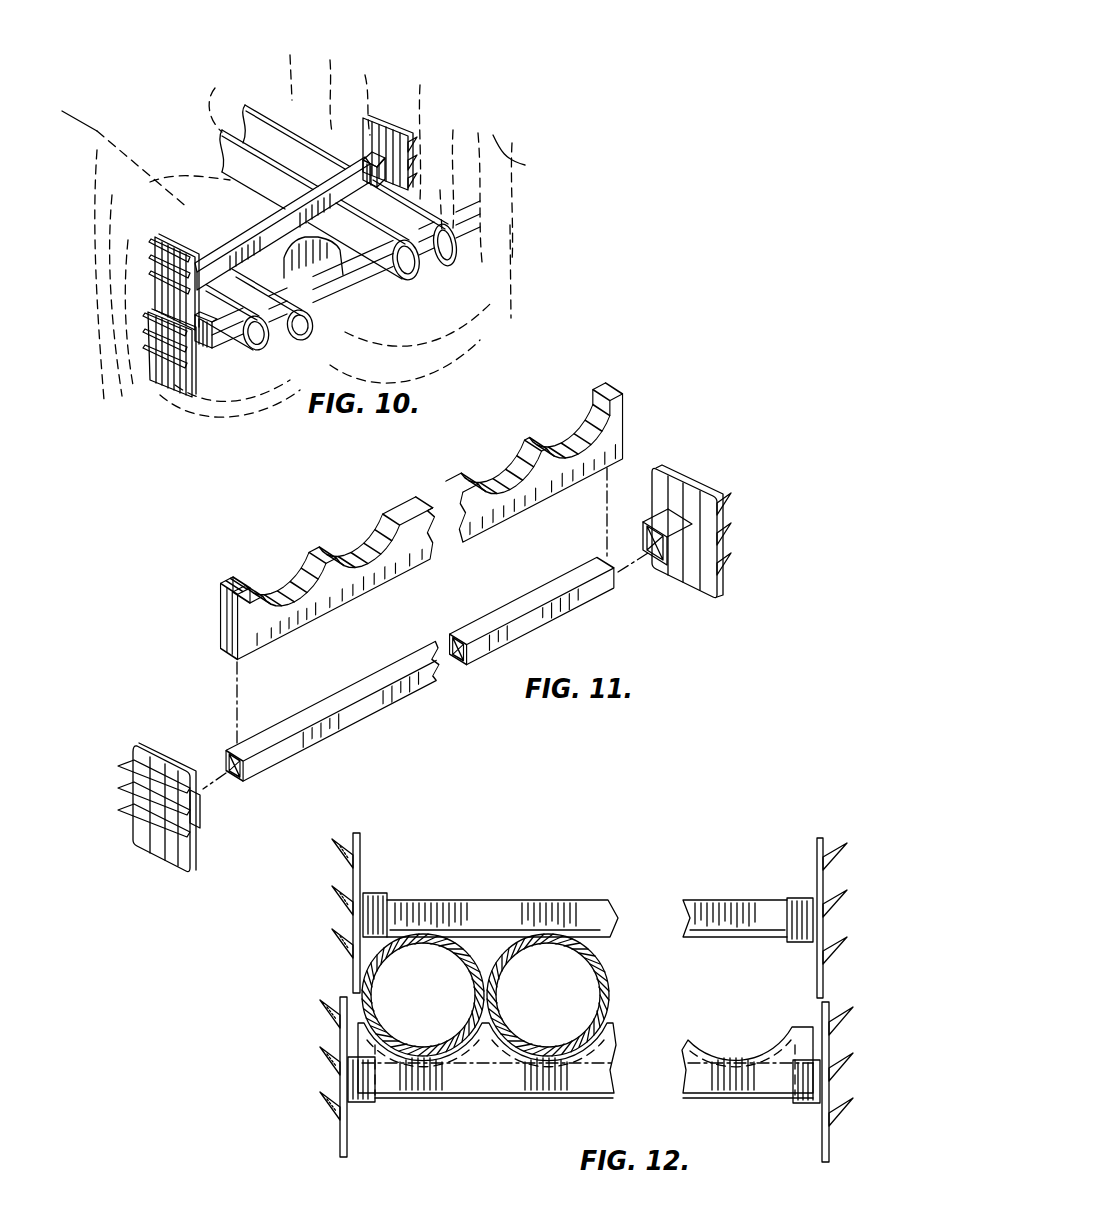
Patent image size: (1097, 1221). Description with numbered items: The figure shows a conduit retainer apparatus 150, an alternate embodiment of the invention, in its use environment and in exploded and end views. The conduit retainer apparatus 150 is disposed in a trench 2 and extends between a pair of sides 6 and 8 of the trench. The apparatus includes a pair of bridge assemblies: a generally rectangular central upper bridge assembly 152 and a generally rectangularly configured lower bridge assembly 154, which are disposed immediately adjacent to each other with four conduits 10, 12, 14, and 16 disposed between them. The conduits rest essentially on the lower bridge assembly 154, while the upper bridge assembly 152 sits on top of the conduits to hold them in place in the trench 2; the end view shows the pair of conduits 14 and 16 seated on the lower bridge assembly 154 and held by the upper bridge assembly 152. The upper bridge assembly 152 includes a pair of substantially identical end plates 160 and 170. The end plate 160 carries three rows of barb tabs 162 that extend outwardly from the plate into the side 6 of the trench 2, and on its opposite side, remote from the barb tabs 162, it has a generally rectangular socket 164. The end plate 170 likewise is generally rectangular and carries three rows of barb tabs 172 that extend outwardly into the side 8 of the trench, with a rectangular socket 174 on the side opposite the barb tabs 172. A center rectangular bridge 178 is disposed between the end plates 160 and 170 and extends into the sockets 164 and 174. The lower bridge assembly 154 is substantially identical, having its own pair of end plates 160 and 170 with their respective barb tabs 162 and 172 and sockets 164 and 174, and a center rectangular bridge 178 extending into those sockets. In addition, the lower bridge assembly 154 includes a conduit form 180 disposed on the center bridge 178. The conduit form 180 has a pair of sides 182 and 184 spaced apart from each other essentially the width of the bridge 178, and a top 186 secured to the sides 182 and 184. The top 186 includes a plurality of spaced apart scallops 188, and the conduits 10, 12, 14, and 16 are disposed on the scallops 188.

In FIG. 10, the trench 2 is at (178, 126).
In FIG. 10, the side 6 is at (355, 75).
In FIG. 10, the side 8 is at (96, 124).
In FIG. 10, the conduit 10 is at (500, 268).
In FIG. 10, the conduit 12 is at (415, 281).
In FIG. 10, the conduit 14 is at (314, 335).
In FIG. 12, the conduit 14 is at (597, 945).
In FIG. 10, the conduit 16 is at (270, 348).
In FIG. 12, the conduit 16 is at (467, 1047).
In FIG. 10, the conduit retainer apparatus 150 is at (361, 219).
In FIG. 12, the conduit retainer apparatus 150 is at (587, 963).
In FIG. 10, the upper bridge assembly 152 is at (280, 198).
In FIG. 12, the upper bridge assembly 152 is at (587, 976).
In FIG. 10, the lower bridge assembly 154 is at (154, 320).
In FIG. 11, the lower bridge assembly 154 is at (719, 532).
In FIG. 12, the lower bridge assembly 154 is at (358, 978).
In FIG. 10, the end plate 160 is at (377, 112).
In FIG. 11, the end plate 160 is at (690, 593).
In FIG. 12, the end plate 160 is at (812, 855).
In FIG. 10, the barb tabs 162 is at (393, 125).
In FIG. 11, the barb tabs 162 is at (715, 483).
In FIG. 12, the barb tabs 162 is at (847, 843).
In FIG. 10, the socket 164 is at (395, 168).
In FIG. 11, the socket 164 is at (657, 562).
In FIG. 12, the socket 164 is at (800, 898).
In FIG. 10, the end plate 170 is at (148, 293).
In FIG. 11, the end plate 170 is at (148, 853).
In FIG. 12, the end plate 170 is at (362, 850).
In FIG. 10, the barb tabs 172 is at (150, 243).
In FIG. 11, the barb tabs 172 is at (122, 764).
In FIG. 12, the barb tabs 172 is at (337, 903).
In FIG. 10, the socket 174 is at (227, 342).
In FIG. 11, the socket 174 is at (201, 809).
In FIG. 12, the socket 174 is at (375, 893).
In FIG. 10, the center rectangular bridge 178 is at (330, 150).
In FIG. 11, the center rectangular bridge 178 is at (338, 740).
In FIG. 12, the center rectangular bridge 178 is at (532, 900).
In FIG. 10, the conduit form 180 is at (326, 283).
In FIG. 11, the conduit form 180 is at (426, 525).
In FIG. 12, the conduit form 180 is at (585, 1057).
In FIG. 11, the side 182 is at (268, 637).
In FIG. 11, the side 184 is at (243, 640).
In FIG. 11, the top 186 is at (232, 590).
In FIG. 11, the scallops 188 is at (310, 580).
In FIG. 12, the scallops 188 is at (724, 1045).